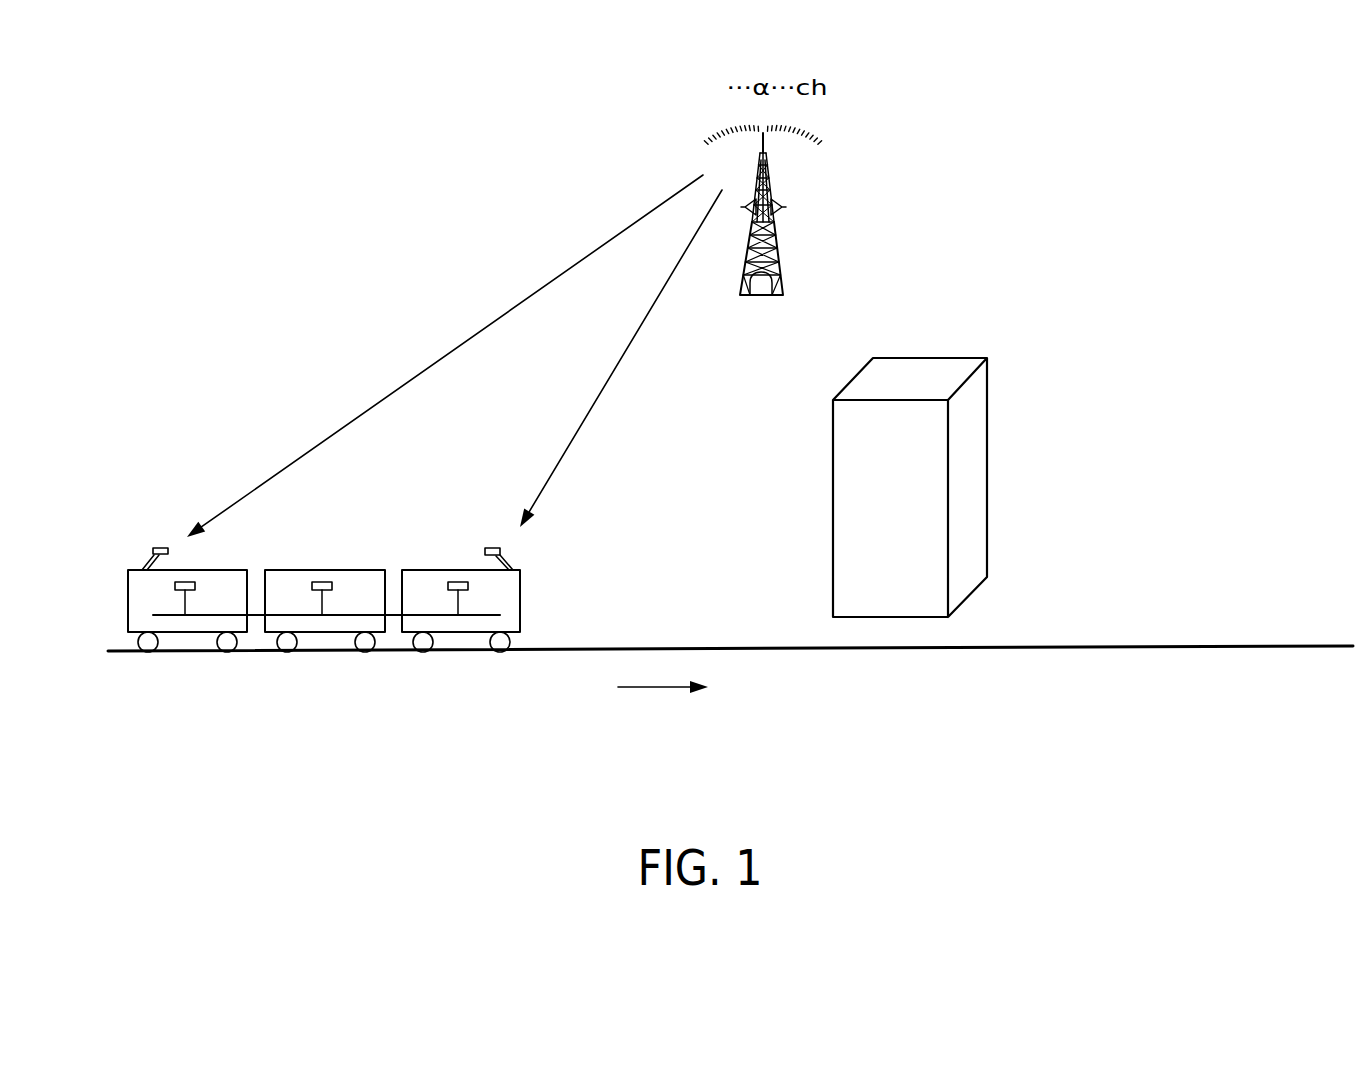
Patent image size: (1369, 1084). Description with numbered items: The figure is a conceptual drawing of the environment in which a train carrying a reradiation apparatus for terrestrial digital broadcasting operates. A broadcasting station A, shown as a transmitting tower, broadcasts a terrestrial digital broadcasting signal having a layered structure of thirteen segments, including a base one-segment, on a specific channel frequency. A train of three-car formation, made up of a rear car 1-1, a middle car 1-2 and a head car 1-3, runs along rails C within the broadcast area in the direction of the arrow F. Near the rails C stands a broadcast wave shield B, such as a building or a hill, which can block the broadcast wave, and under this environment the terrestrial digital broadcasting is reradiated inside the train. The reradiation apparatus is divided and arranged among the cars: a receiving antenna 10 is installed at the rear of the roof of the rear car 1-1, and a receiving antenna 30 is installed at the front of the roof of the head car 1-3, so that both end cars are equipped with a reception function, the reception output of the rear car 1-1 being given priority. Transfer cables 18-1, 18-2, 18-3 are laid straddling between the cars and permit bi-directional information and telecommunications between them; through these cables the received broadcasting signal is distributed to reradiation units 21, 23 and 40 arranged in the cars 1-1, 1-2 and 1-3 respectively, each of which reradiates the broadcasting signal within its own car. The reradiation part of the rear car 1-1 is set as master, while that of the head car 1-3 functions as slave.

The rear car 1-1 is at (187, 632).
The middle car 1-2 is at (327, 632).
The head car 1-3 is at (462, 632).
The receiving antenna 10 is at (160, 546).
The receiving antenna 30 is at (493, 547).
The reradiation unit 21 is at (185, 581).
The reradiation unit 23 is at (322, 580).
The reradiation unit 40 is at (459, 580).
The transfer cable 18-1 is at (162, 614).
The transfer cable 18-2 is at (283, 613).
The transfer cable 18-3 is at (418, 613).
The broadcasting station A is at (740, 297).
The broadcast wave shield B is at (988, 390).
The rails C is at (1010, 652).
The direction of travel arrow F is at (655, 690).